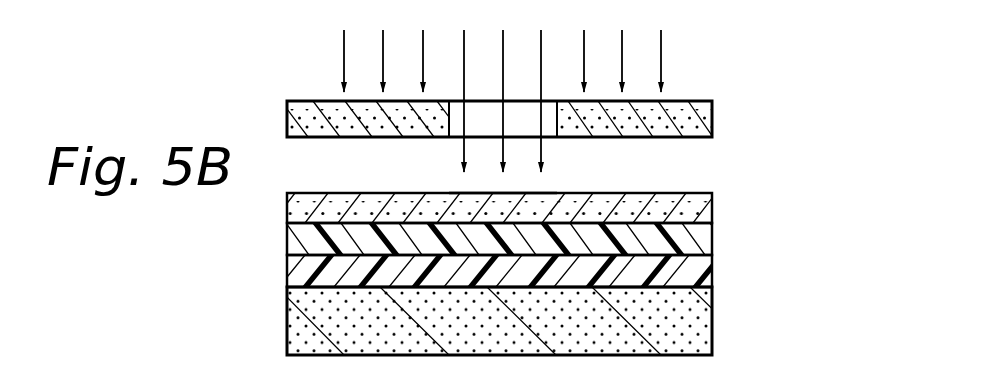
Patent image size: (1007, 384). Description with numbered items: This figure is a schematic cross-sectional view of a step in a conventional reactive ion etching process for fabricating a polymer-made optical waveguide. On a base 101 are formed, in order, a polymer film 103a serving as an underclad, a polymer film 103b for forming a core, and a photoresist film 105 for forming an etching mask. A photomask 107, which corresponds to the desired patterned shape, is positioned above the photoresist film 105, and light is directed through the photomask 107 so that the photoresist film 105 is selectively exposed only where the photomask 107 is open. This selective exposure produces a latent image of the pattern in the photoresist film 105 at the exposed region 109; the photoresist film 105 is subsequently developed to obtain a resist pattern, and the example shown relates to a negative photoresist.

The base 101 is at (703, 309).
The polymer film (underclad) 103a is at (688, 267).
The polymer film (for forming a core) 103b is at (700, 232).
The photoresist film 105 is at (700, 207).
The photomask 107 is at (700, 122).
The exposed region 109 is at (533, 193).